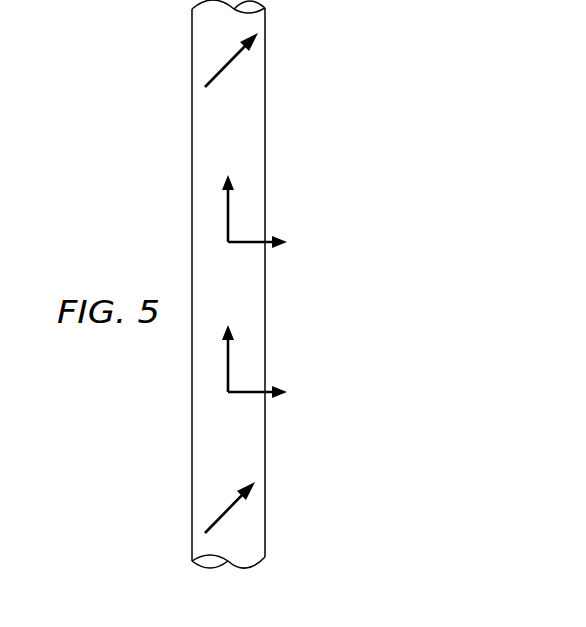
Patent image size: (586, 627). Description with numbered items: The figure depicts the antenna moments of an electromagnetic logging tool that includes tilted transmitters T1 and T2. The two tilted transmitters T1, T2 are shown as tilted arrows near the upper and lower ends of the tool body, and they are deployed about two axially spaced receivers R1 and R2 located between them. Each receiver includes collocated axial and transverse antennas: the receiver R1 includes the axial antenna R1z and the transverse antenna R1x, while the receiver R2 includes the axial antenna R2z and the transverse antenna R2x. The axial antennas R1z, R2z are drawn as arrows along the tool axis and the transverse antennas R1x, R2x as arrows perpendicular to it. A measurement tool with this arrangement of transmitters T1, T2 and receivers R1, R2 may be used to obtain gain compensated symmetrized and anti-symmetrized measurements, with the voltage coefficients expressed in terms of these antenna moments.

The tilted transmitter T1 is at (231, 61).
The tilted transmitter T2 is at (230, 508).
The receiver R1 is at (243, 214).
The axial antenna R1z is at (252, 202).
The transverse antenna R1x is at (306, 242).
The receiver R2 is at (243, 364).
The axial antenna R2z is at (252, 352).
The transverse antenna R2x is at (306, 392).